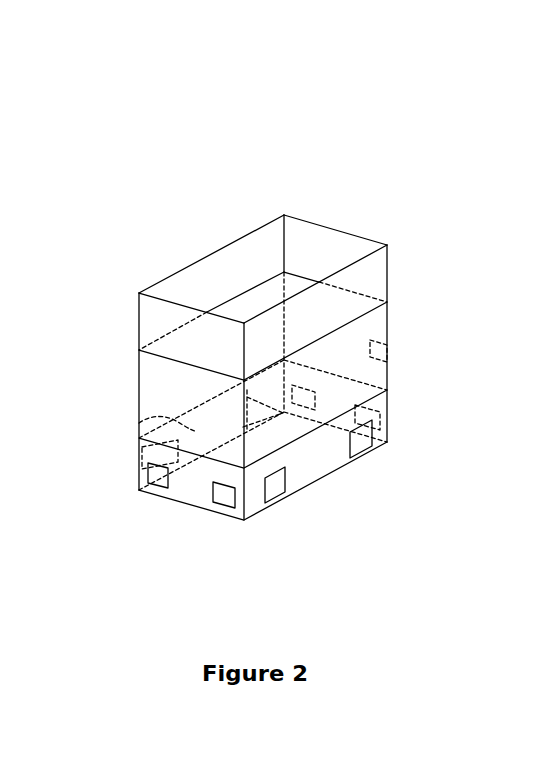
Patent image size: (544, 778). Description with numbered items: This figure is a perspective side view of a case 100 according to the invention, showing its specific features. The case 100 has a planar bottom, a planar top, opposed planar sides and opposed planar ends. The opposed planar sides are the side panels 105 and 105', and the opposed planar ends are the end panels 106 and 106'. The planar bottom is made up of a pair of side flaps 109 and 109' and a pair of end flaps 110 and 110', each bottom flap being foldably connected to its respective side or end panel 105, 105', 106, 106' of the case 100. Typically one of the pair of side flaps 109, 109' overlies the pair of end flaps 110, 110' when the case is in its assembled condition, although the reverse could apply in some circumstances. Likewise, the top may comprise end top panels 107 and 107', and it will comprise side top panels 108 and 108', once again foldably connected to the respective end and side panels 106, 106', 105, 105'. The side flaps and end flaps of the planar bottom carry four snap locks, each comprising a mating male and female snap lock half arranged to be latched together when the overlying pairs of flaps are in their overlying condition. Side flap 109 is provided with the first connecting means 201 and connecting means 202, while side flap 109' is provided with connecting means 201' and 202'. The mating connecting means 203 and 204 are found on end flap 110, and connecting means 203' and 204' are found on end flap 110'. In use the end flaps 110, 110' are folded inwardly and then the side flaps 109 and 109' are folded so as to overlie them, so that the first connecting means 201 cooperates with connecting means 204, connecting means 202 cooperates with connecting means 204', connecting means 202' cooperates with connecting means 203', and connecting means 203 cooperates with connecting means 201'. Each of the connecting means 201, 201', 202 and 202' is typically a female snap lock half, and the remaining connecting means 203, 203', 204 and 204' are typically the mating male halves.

The case 100 is at (114, 281).
The planar side 105 is at (369, 335).
The planar side 105' is at (211, 245).
The planar end 106 is at (144, 391).
The planar end 106' is at (316, 220).
The end top panel 107 is at (154, 336).
The end top panel 107' is at (368, 210).
The side top panel 108 is at (350, 284).
The side top panel 108' is at (263, 238).
The side flap 109 is at (329, 442).
The side flap 109' is at (119, 416).
The end flap 110 is at (271, 423).
The end flap 110' is at (324, 399).
The first connecting means 201 is at (315, 527).
The connecting means 201' is at (110, 454).
The connecting means 202 is at (407, 474).
The connecting means 202' is at (435, 346).
The connecting means 203 is at (132, 519).
The connecting means 203' is at (386, 383).
The connecting means 204 is at (236, 550).
The connecting means 204' is at (435, 430).